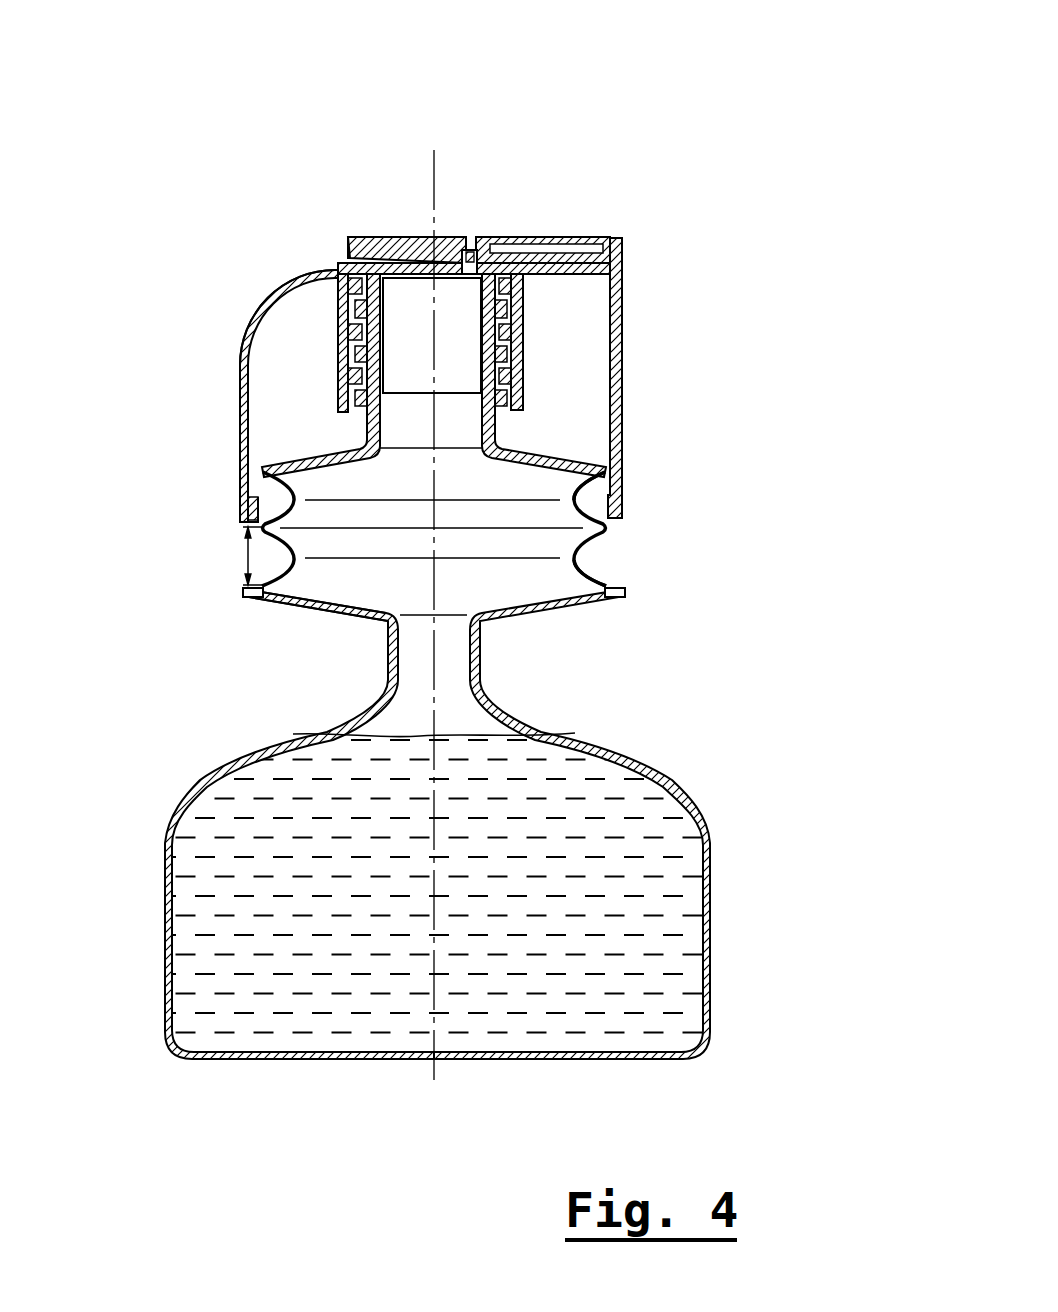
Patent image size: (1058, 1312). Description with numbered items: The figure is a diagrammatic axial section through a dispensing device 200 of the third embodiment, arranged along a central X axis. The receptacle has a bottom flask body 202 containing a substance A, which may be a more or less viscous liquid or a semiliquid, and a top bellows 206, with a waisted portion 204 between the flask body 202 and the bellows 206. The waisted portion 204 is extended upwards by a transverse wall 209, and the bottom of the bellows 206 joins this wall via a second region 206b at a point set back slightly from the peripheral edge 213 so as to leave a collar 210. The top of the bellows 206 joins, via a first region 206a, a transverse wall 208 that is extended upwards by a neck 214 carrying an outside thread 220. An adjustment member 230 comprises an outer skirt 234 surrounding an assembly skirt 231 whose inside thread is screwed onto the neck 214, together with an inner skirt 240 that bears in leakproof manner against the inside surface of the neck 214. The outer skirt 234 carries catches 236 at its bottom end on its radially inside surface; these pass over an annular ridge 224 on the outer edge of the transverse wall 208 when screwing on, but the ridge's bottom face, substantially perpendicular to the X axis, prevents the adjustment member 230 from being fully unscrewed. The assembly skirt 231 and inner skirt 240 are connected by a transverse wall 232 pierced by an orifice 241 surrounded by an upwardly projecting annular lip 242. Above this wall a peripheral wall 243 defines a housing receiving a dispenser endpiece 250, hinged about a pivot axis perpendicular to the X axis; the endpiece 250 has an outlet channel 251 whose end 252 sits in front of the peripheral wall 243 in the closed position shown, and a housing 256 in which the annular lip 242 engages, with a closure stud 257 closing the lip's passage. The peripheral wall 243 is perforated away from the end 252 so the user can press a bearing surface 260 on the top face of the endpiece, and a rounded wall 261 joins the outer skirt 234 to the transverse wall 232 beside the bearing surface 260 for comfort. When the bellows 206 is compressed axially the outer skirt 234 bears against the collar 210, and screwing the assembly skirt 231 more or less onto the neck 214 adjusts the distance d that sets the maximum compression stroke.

The device 200 is at (706, 135).
The flask body 202 is at (708, 870).
The waisted portion 204 is at (397, 660).
The bellows 206 is at (590, 563).
The first region 206a is at (623, 493).
The second region 206b is at (617, 585).
The transverse wall 208 is at (560, 450).
The transverse wall 209 is at (318, 602).
The collar 210 is at (240, 604).
The peripheral edge 213 is at (623, 588).
The neck 214 is at (505, 410).
The outside thread 220 is at (523, 352).
The annular ridge 224 is at (623, 462).
The adjustment member 230 is at (266, 290).
The assembly skirt 231 is at (340, 372).
The transverse wall 232 is at (568, 234).
The outer skirt 234 is at (243, 425).
The catches 236 is at (250, 503).
The inner skirt 240 is at (368, 235).
The orifice 241 is at (470, 283).
The annular lip 242 is at (438, 234).
The peripheral wall 243 is at (624, 257).
The dispenser endpiece 250 is at (398, 233).
The outlet channel 251 is at (512, 234).
The end of outlet channel 252 is at (600, 235).
The housing 256 is at (455, 234).
The closure stud 257 is at (470, 233).
The bearing surface 260 is at (345, 234).
The rounded wall 261 is at (248, 335).
The substance A is at (630, 803).
The X axis X is at (435, 652).
The distance d is at (239, 556).